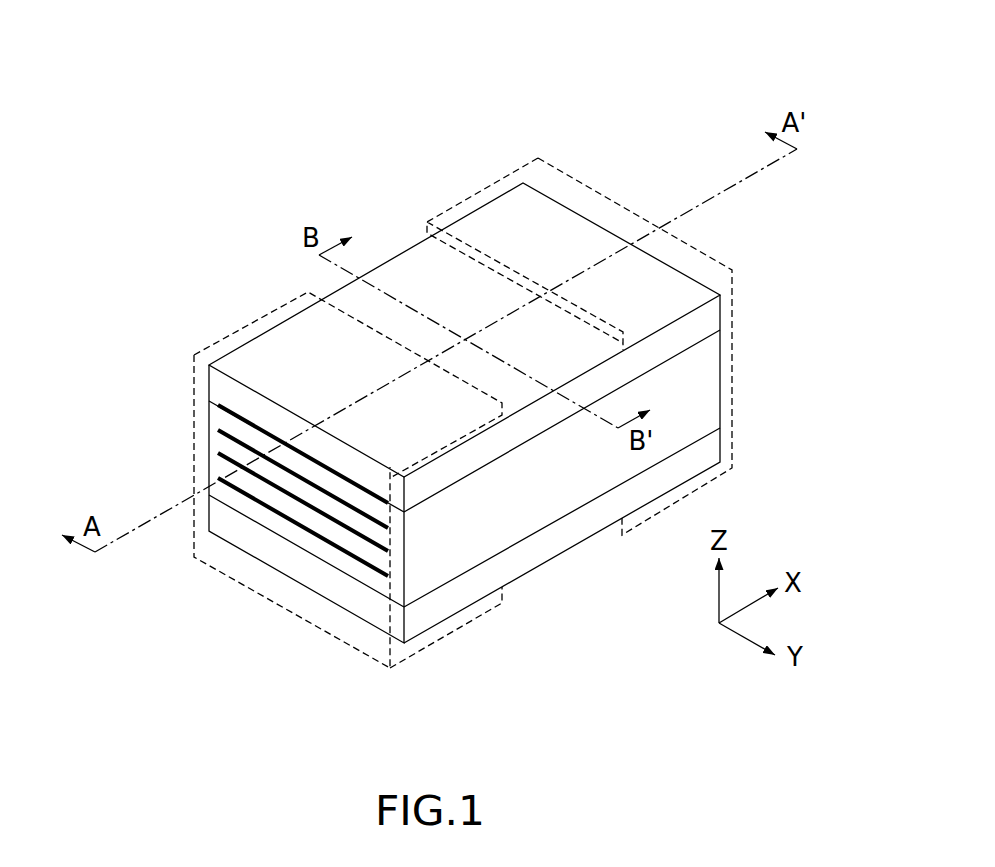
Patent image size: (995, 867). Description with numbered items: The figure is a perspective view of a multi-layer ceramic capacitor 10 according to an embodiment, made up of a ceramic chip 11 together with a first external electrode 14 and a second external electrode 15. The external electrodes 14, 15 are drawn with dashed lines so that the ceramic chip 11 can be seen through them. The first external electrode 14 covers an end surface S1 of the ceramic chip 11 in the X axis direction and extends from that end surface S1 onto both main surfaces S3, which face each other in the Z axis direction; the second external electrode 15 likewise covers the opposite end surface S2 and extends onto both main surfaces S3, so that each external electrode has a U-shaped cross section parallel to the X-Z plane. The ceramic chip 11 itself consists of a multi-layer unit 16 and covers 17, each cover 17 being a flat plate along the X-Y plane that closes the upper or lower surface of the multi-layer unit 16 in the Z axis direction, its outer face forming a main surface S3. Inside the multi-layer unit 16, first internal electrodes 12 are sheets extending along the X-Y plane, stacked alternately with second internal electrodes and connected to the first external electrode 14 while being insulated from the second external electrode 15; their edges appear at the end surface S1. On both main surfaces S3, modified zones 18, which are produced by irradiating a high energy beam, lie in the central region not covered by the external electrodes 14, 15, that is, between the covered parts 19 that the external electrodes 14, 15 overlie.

The multi-layer ceramic capacitor 10 is at (381, 100).
The ceramic chip 11 is at (378, 238).
The first internal electrodes 12 is at (301, 468).
The first external electrode 14 is at (233, 342).
The second external electrode 15 is at (562, 185).
The multi-layer unit 16 is at (563, 490).
The covers 17 is at (703, 320).
The modified zones 18 is at (405, 262).
The covered parts 19 is at (276, 360).
The end surface S1 is at (292, 575).
The end surface S2 is at (632, 226).
The main surfaces S3 is at (482, 326).